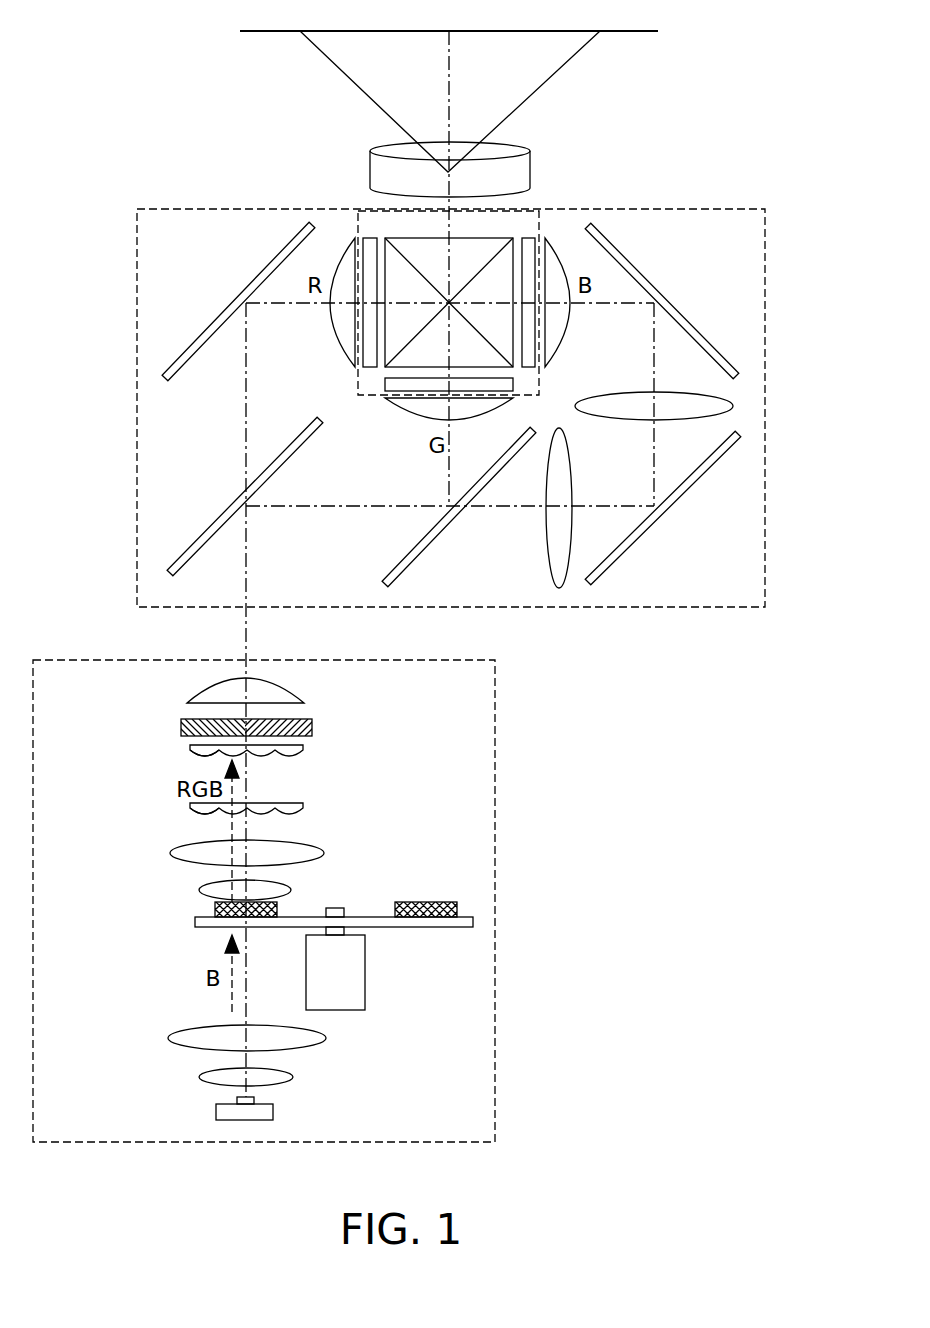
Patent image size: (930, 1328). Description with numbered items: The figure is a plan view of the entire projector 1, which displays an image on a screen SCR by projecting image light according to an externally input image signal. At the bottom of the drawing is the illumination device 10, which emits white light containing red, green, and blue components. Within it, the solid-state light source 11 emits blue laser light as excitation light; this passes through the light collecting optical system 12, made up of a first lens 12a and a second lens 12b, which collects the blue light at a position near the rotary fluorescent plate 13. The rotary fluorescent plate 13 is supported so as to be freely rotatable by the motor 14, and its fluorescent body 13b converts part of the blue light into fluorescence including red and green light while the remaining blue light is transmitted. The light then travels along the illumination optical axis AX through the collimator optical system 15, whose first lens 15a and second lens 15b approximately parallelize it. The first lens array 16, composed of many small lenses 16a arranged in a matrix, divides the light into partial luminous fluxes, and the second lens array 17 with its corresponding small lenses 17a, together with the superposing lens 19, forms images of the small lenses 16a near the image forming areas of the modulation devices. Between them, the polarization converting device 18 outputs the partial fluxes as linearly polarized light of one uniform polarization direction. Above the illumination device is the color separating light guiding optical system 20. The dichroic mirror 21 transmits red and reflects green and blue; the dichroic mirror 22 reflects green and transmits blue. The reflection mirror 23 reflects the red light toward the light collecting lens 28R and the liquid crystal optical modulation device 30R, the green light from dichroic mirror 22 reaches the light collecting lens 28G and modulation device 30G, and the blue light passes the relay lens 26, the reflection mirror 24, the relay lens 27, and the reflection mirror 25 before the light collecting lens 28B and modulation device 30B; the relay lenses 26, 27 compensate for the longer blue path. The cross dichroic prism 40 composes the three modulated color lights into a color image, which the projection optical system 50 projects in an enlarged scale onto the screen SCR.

The projector 1 is at (793, 134).
The screen SCR is at (634, 33).
The projection optical system 50 is at (533, 152).
The color separating light guiding optical system 20 is at (136, 437).
The cross dichroic prism 40 is at (466, 240).
The liquid crystal optical modulation device 30R is at (360, 218).
The liquid crystal optical modulation device 30G is at (385, 383).
The liquid crystal optical modulation device 30B is at (537, 218).
The light collecting lens 28R is at (338, 334).
The light collecting lens 28G is at (397, 412).
The light collecting lens 28B is at (560, 333).
The dichroic mirror 21 is at (190, 548).
The dichroic mirror 22 is at (392, 565).
The reflection mirror 23 is at (205, 333).
The reflection mirror 24 is at (652, 540).
The reflection mirror 25 is at (709, 346).
The relay lens 26 is at (547, 545).
The relay lens 27 is at (735, 406).
The illumination optical axis AX is at (243, 628).
The illumination device 10 is at (495, 757).
The superposing lens 19 is at (306, 702).
The polarization converting device 18 is at (313, 728).
The second lens array 17 is at (305, 750).
The small lens 17a is at (198, 757).
The first lens array 16 is at (305, 808).
The small lens 16a is at (198, 813).
The collimator optical system 15 is at (183, 869).
The first lens 15a is at (200, 890).
The second lens 15b is at (172, 855).
The rotary fluorescent plate 13 is at (339, 878).
The fluorescent body 13b is at (430, 900).
The motor 14 is at (366, 968).
The light collecting optical system 12 is at (314, 1060).
The first lens 12a is at (293, 1076).
The second lens 12b is at (326, 1037).
The solid-state light source 11 is at (192, 1106).